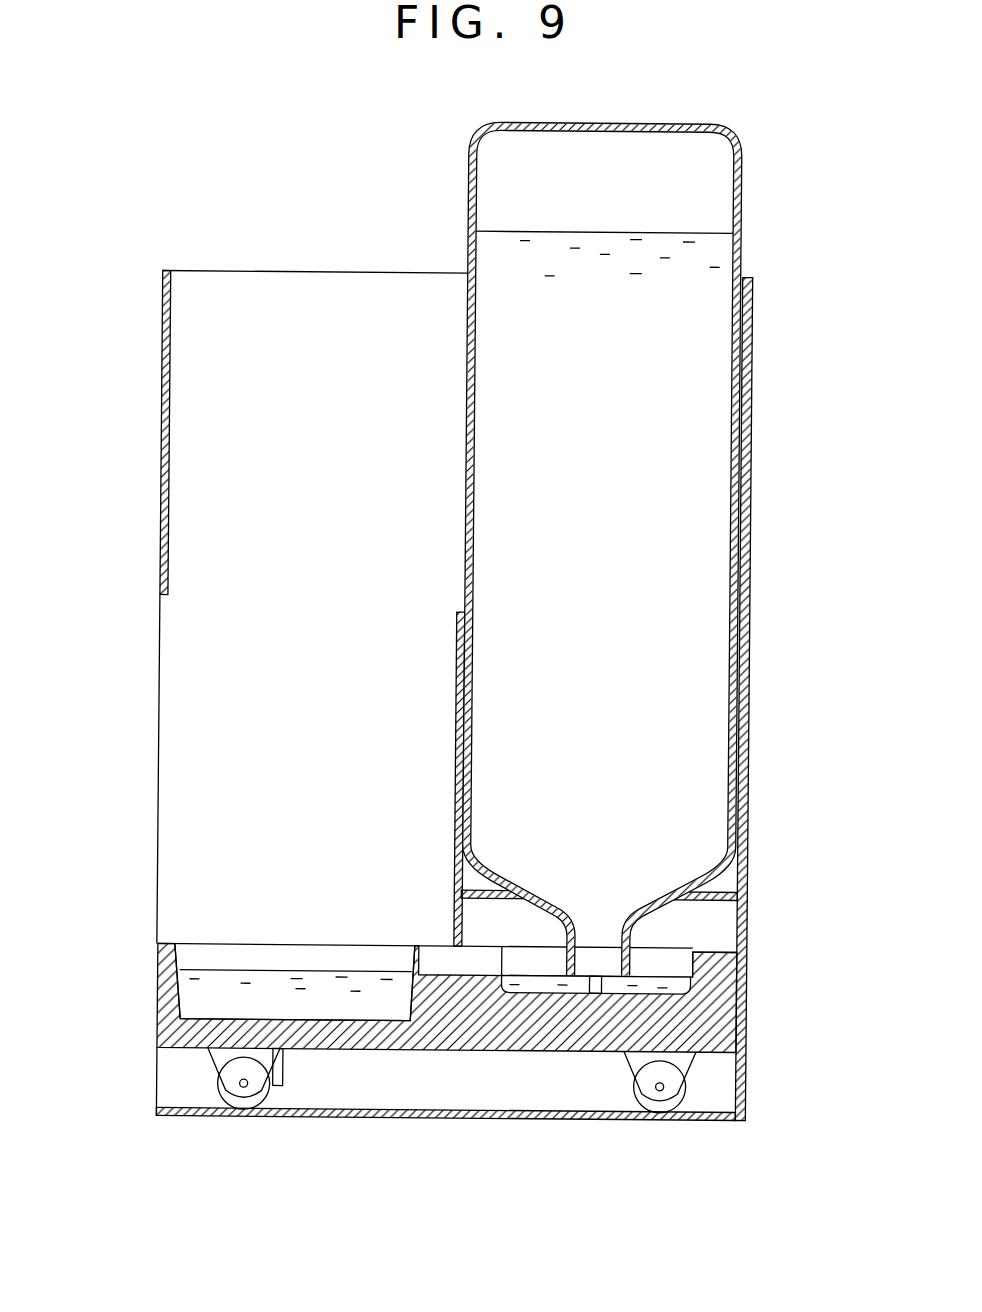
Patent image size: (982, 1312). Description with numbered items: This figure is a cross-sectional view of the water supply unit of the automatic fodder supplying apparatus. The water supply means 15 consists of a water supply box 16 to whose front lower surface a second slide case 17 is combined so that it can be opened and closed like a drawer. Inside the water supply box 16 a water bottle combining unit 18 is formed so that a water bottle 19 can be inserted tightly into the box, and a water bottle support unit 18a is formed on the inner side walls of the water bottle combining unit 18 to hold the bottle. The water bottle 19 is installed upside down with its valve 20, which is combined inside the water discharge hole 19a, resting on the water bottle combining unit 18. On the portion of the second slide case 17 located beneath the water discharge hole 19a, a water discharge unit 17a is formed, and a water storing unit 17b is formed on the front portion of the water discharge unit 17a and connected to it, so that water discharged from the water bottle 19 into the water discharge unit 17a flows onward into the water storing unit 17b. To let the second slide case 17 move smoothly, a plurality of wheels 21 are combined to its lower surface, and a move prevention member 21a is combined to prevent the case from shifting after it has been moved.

The water supply means 15 is at (157, 302).
The water supply box 16 is at (158, 413).
The second slide case 17 is at (440, 1051).
The water discharge unit 17a is at (696, 966).
The water storing unit 17b is at (194, 998).
The water bottle combining unit 18 is at (456, 705).
The water bottle support unit 18a is at (732, 900).
The water bottle 19 is at (462, 160).
The water discharge hole 19a is at (634, 961).
The valve 20 is at (600, 962).
The wheels 21 is at (231, 1102).
The move prevention member 21a is at (287, 1088).